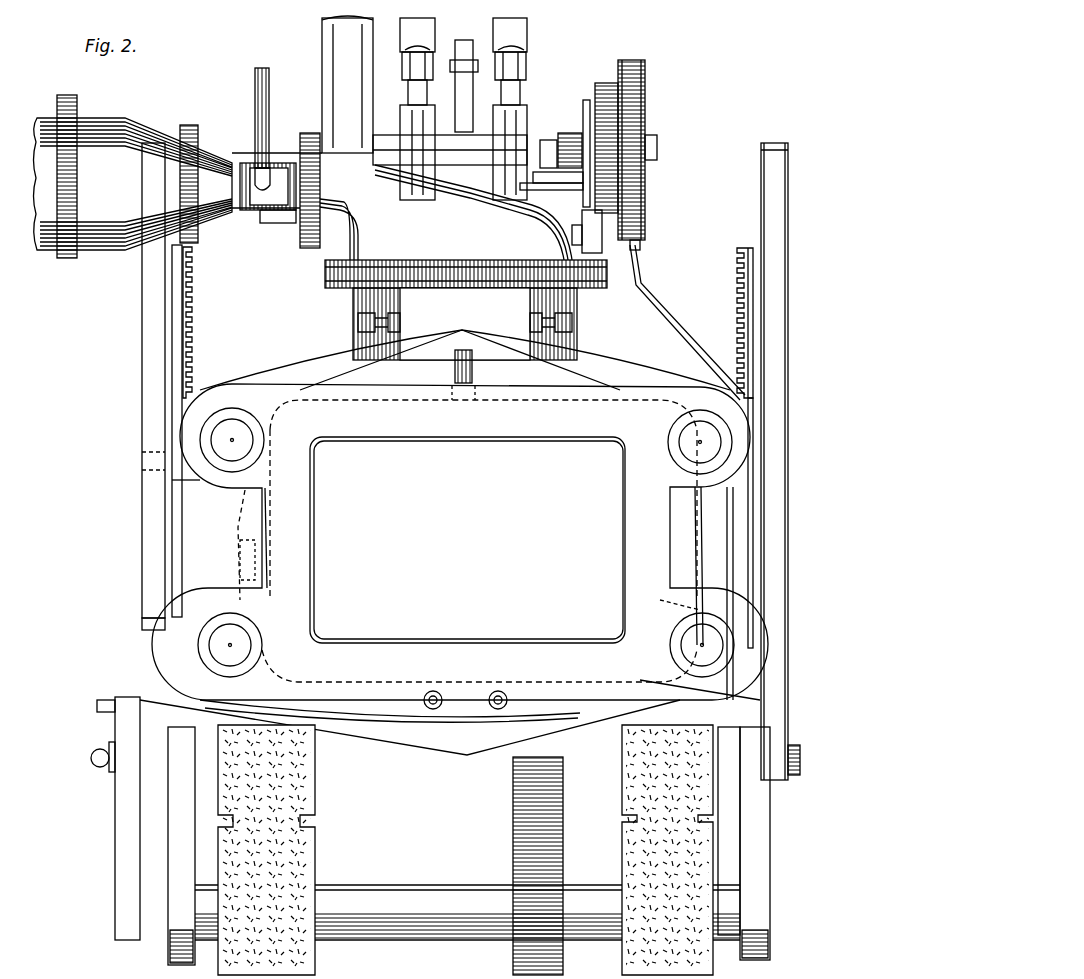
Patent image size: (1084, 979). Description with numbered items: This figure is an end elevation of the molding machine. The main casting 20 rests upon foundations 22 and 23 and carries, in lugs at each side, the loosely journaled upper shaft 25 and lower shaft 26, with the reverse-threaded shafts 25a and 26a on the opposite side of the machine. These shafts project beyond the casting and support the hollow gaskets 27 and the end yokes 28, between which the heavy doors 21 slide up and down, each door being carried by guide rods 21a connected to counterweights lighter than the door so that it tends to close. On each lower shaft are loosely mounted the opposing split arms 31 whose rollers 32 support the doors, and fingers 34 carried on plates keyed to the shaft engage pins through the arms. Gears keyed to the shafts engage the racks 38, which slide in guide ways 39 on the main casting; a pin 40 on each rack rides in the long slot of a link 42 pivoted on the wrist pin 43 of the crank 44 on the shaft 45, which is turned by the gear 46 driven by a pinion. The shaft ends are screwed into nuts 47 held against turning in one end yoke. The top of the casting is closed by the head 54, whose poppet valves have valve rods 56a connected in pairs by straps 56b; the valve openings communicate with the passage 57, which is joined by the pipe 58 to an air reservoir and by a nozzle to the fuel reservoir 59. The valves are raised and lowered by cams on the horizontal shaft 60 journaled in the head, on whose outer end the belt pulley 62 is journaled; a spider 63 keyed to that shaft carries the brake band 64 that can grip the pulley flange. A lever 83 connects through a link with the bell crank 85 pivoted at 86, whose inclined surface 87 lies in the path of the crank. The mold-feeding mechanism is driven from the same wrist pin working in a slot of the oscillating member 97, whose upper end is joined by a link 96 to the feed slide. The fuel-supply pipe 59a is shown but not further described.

The main casting 20 is at (578, 352).
The doors 21 is at (540, 448).
The guide rods 21a is at (475, 375).
The foundation 22 is at (312, 845).
The foundation 23 is at (628, 832).
The upper shaft 25 is at (231, 440).
The upper shaft 25a is at (700, 442).
The lower shaft 26 is at (230, 645).
The lower shaft 26a is at (702, 645).
The hollow gaskets 27 is at (460, 740).
The end yokes 28 is at (262, 505).
The split arms 31 is at (355, 720).
The rollers 32 is at (433, 708).
The fingers 34 is at (150, 630).
The racks 38 is at (193, 352).
The guide ways 39 is at (190, 486).
The pin 40 is at (142, 462).
The links 42 is at (145, 522).
The wrist pin 43 is at (94, 752).
The crank 44 is at (178, 832).
The shaft 45 is at (392, 940).
The gear 46 is at (522, 830).
The nuts 47 is at (212, 428).
The cover or head 54 is at (572, 228).
The valve rods 56a is at (515, 100).
The straps 56b is at (527, 68).
The passage 57 is at (318, 240).
The pipe 58 is at (140, 122).
The fuel reservoir 59 is at (242, 160).
The rod 59a is at (268, 82).
The horizontal shaft 60 is at (440, 140).
The belt pulley 62 is at (645, 110).
The spider 63 is at (585, 128).
The brake band 64 is at (605, 83).
The lever 83 is at (652, 302).
The bell crank 85 is at (530, 322).
The pivot 86 is at (650, 655).
The inclined surface 87 is at (700, 690).
The link 96 is at (108, 700).
The oscillating member 97 is at (120, 805).